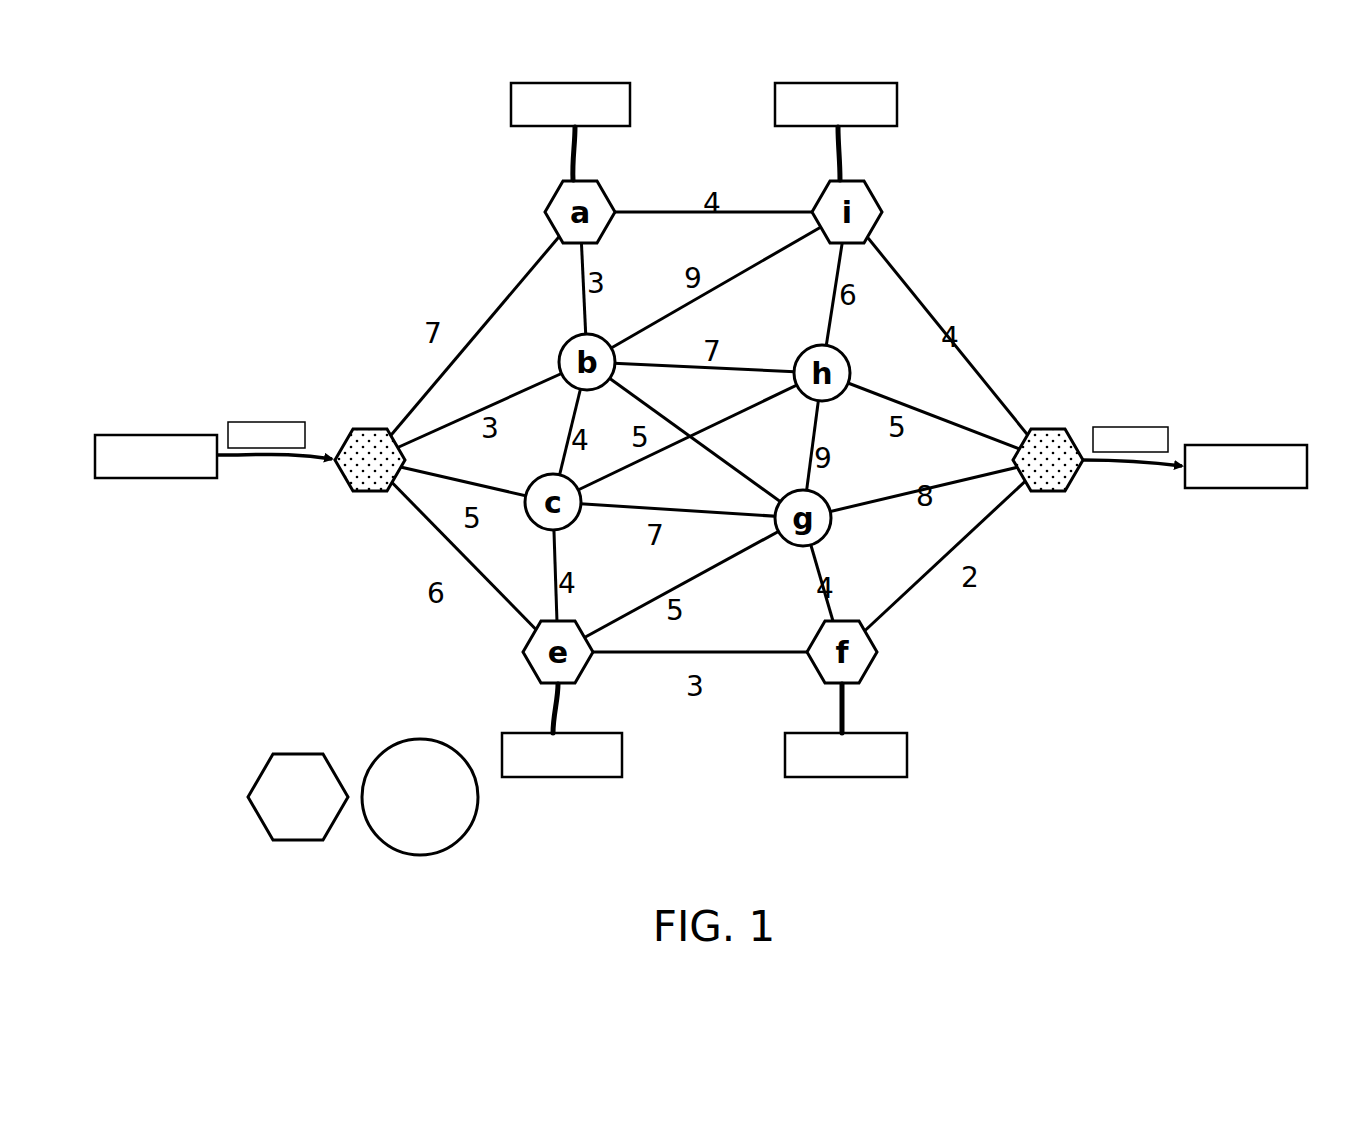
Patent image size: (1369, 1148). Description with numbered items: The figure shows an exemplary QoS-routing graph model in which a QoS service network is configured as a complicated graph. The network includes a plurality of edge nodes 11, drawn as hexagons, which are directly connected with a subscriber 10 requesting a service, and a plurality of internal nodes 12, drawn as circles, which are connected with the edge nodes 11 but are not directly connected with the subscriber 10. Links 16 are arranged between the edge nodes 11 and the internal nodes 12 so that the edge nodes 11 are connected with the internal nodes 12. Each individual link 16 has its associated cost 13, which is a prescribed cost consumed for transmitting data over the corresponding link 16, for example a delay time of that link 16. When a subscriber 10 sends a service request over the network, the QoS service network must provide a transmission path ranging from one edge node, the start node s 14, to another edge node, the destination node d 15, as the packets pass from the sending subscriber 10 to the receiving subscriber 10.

The subscriber 10 is at (608, 83).
The edge node 11 is at (300, 841).
The internal node 12 is at (432, 855).
The cost 13 is at (425, 592).
The start node s 14 is at (362, 428).
The destination node d 15 is at (1056, 428).
The link 16 is at (498, 297).